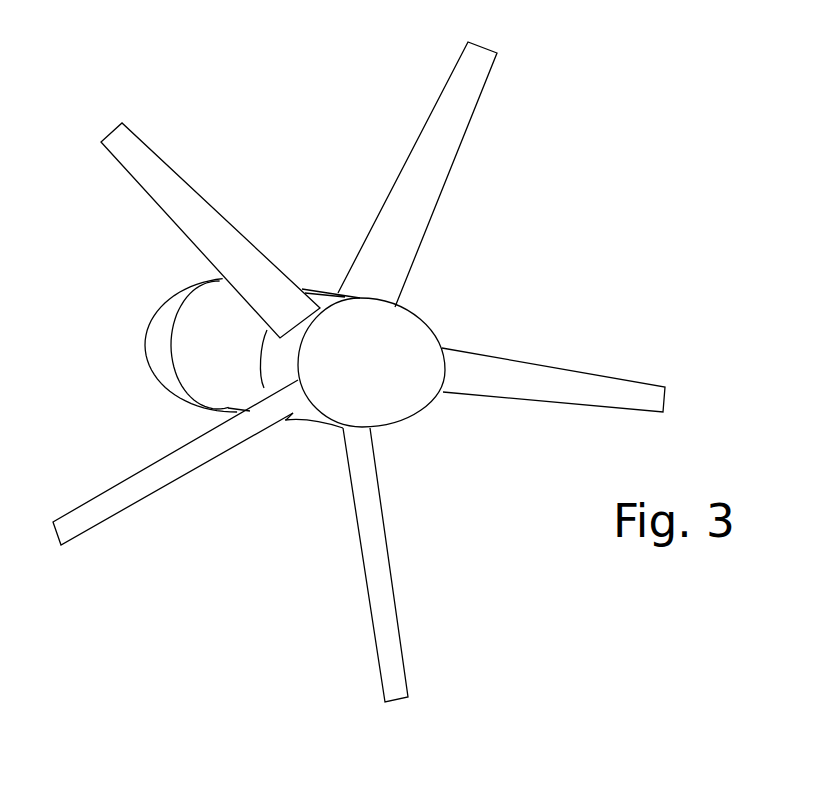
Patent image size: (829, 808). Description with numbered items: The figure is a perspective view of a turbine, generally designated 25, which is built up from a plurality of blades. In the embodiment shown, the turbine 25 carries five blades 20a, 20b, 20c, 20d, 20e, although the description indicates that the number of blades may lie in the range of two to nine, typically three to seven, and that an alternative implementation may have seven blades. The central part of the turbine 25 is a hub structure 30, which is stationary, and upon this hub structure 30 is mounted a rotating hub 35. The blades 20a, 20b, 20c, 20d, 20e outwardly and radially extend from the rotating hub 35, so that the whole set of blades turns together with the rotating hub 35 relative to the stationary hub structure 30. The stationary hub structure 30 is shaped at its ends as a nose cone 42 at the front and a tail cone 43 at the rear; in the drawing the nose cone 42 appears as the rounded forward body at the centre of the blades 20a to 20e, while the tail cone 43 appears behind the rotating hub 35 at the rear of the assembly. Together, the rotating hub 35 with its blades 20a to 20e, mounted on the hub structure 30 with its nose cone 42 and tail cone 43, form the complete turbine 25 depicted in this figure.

The turbine 25 is at (496, 271).
The blade 20a is at (572, 398).
The blade 20b is at (448, 112).
The blade 20c is at (157, 168).
The blade 20d is at (152, 480).
The blade 20e is at (378, 610).
The hub structure 30 is at (386, 372).
The rotating hub 35 is at (280, 364).
The nose cone 42 is at (410, 337).
The tail cone 43 is at (157, 342).